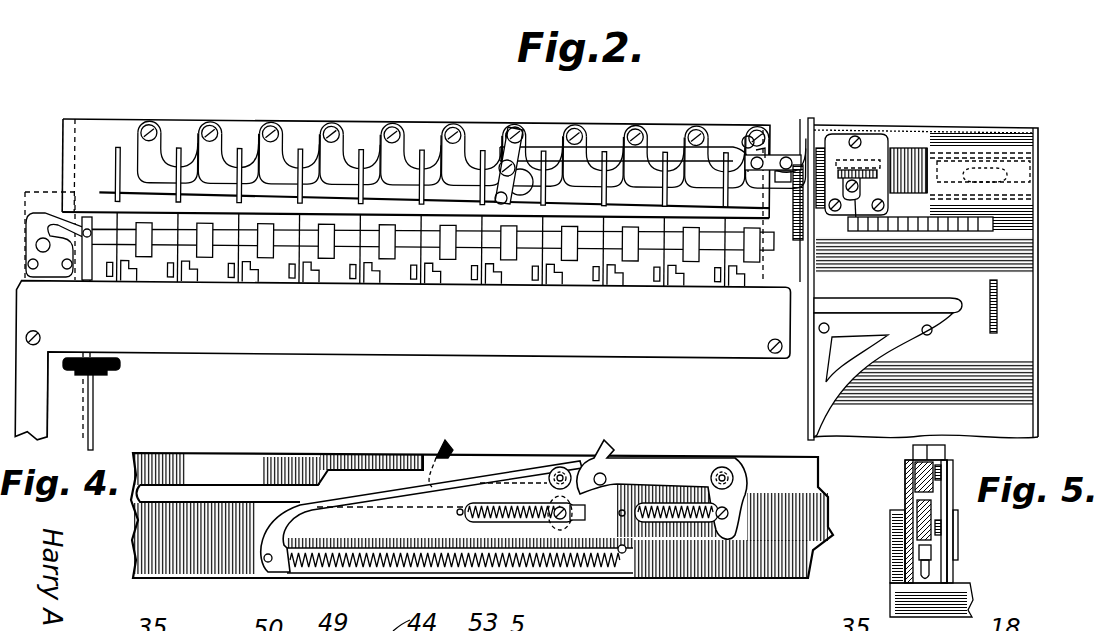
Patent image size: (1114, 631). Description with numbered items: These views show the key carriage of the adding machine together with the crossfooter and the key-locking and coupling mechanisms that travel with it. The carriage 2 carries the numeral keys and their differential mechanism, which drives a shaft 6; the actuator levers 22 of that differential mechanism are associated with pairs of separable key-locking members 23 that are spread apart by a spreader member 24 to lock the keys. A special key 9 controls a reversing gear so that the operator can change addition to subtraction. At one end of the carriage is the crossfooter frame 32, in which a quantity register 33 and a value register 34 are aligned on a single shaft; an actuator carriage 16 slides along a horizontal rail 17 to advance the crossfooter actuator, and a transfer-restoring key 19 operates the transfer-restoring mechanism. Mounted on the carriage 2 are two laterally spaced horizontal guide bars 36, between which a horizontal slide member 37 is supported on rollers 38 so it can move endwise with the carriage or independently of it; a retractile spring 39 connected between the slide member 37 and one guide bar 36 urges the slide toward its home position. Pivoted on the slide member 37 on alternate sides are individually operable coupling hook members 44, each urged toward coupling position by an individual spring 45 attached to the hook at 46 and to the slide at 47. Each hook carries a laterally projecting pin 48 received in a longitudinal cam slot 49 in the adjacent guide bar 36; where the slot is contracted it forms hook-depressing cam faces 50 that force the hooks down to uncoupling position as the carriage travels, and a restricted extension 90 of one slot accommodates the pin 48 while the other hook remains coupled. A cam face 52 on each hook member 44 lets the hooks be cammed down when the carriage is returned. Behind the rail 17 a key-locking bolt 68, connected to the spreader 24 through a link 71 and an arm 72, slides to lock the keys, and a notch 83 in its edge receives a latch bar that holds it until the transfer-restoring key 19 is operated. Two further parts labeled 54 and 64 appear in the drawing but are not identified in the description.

In FIG. 2, the carriage 2 is at (402, 364).
In FIG. 2, the shaft 6 is at (778, 178).
In FIG. 2, the special key 9 is at (118, 364).
In FIG. 2, the actuator carriage 16 is at (875, 138).
In FIG. 2, the horizontal rail 17 is at (918, 150).
In FIG. 2, the transfer-restoring key 19 is at (945, 313).
In FIG. 2, the actuator levers 22 is at (112, 158).
In FIG. 2, the separable key-locking members 23 is at (273, 160).
In FIG. 2, the spreader member 24 is at (500, 192).
In FIG. 2, the crossfooter frame 32 is at (1040, 352).
In FIG. 2, the quantity register 33 is at (876, 235).
In FIG. 2, the value register 34 is at (948, 232).
In FIG. 4, the guide bars 36 is at (230, 462).
In FIG. 5, the guide bars 36 is at (905, 566).
In FIG. 4, the slide member 37 is at (357, 500).
In FIG. 5, the slide member 37 is at (947, 537).
In FIG. 4, the rollers 38 is at (622, 554).
In FIG. 4, the retractile spring 39 is at (367, 568).
In FIG. 4, the coupling hook members 44 is at (430, 465).
In FIG. 5, the coupling hook members 44 is at (913, 452).
In FIG. 4, the individual springs 45 is at (525, 518).
In FIG. 4, the spring connection to hook member 46 is at (460, 515).
In FIG. 4, the spring connection to slide member 47 is at (573, 512).
In FIG. 5, the spring connection to slide member 47 is at (905, 497).
In FIG. 4, the laterally projecting pin 48 is at (549, 478).
In FIG. 4, the longitudinal cam slot 49 is at (365, 465).
In FIG. 4, the hook-depressing cam faces 50 is at (326, 492).
In FIG. 4, the cam face 52 is at (445, 455).
In FIG. 2, the pin 54 is at (997, 325).
In FIG. 2, the rack 64 is at (850, 222).
In FIG. 2, the key-locking bolt 68 is at (791, 158).
In FIG. 2, the link 71 is at (522, 172).
In FIG. 2, the arm 72 is at (600, 150).
In FIG. 2, the notch 83 is at (797, 215).
In FIG. 4, the restricted extension 90 is at (185, 487).